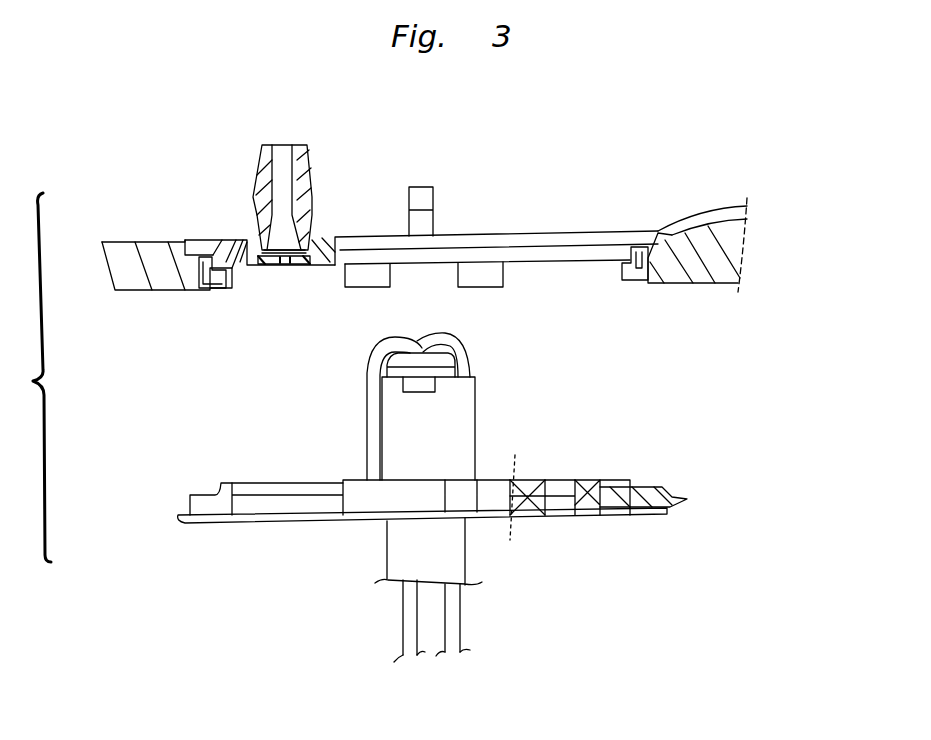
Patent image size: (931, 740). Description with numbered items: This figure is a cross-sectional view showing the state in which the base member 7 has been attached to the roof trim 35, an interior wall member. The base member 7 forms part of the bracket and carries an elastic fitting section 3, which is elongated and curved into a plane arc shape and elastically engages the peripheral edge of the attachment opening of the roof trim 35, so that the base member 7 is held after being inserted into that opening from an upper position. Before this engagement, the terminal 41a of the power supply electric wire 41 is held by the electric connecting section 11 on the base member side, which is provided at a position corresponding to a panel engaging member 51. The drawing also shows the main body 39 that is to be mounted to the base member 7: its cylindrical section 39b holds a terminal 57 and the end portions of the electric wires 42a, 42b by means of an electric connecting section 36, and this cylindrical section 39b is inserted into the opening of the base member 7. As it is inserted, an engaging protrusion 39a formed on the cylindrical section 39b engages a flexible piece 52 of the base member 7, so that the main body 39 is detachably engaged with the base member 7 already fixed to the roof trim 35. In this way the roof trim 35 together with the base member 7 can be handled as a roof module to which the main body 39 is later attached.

The elastic fitting section 3 is at (197, 268).
The base member 7 is at (512, 228).
The electric connecting section 11 is at (260, 280).
The roof trim 35 is at (742, 256).
The electric connecting section 36 is at (560, 466).
The main body 39 is at (316, 537).
The engaging protrusion 39a is at (425, 393).
The cylindrical section 39b is at (470, 397).
The power supply electric wire 41 is at (716, 212).
The terminal 41a is at (305, 267).
The electric wire 42a is at (455, 338).
The electric wire 42b is at (367, 410).
The panel engaging member 51 is at (252, 162).
The flexible piece 52 is at (426, 192).
The terminal 57 is at (578, 476).